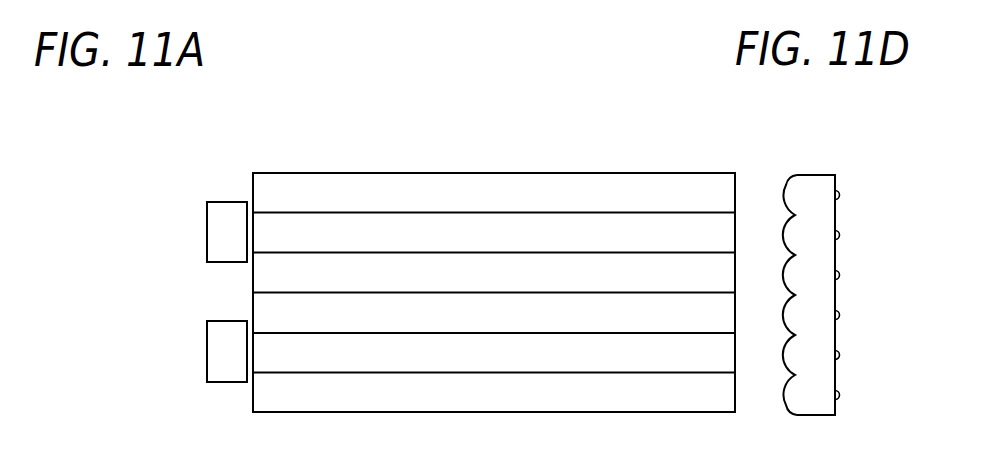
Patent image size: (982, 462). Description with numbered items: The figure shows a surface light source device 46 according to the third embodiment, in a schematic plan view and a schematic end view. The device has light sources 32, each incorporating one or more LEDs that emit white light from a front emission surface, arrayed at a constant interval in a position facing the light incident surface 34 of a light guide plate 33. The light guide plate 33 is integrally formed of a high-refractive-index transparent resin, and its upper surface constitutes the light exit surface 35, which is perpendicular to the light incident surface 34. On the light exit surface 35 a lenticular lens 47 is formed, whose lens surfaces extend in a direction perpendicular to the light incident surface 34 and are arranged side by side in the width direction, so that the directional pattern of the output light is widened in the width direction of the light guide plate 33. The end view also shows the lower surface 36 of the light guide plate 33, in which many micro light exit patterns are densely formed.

In FIG. 11A, the light source 32 is at (226, 237).
In FIG. 11A, the light guide plate 33 is at (494, 232).
In FIG. 11D, the light guide plate 33 is at (821, 190).
In FIG. 11A, the light incident surface 34 is at (253, 291).
In FIG. 11A, the light exit surface 35 is at (494, 353).
In FIG. 11D, the light exit surface 35 is at (759, 271).
In FIG. 11D, the lower surface 36 is at (837, 370).
In FIG. 11A, the surface light source device 46 is at (688, 97).
In FIG. 11A, the lenticular lens 47 is at (441, 229).
In FIG. 11D, the lenticular lens 47 is at (784, 237).